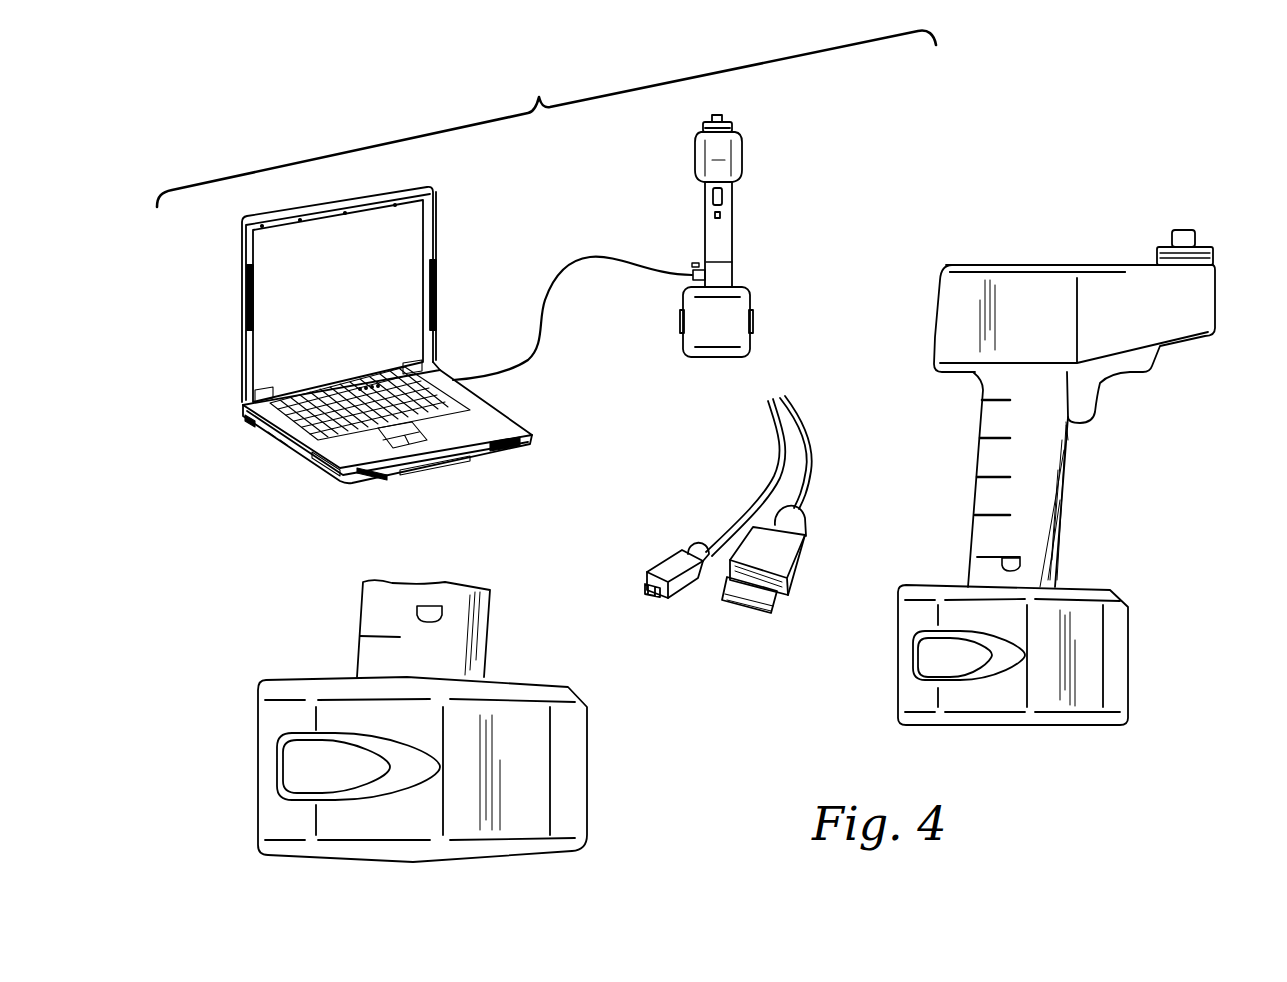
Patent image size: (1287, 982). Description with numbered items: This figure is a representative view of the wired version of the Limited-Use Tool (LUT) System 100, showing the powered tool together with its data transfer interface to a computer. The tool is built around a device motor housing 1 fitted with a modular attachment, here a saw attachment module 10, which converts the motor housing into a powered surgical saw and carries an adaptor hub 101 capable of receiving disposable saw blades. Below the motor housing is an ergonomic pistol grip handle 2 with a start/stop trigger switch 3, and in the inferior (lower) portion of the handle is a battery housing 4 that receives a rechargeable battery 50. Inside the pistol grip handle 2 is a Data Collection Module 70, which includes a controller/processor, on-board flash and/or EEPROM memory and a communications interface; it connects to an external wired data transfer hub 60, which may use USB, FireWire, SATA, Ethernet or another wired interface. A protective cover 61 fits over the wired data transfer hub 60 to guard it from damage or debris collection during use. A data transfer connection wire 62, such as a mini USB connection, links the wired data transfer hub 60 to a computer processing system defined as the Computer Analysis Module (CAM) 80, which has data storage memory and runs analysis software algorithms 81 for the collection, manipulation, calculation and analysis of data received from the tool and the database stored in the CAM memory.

The device motor housing 1 is at (758, 154).
The pistol grip handle 2 is at (740, 207).
The start/stop trigger switch 3 is at (1110, 400).
The battery housing 4 is at (1139, 643).
The saw attachment module 10 is at (1103, 265).
The rechargeable battery 50 is at (250, 764).
The wired data transfer hub 60 is at (690, 268).
The protective cover 61 is at (692, 262).
The data transfer connection wire 62 is at (542, 358).
The data collection module 70 is at (722, 269).
The Computer Analysis Module 80 is at (341, 335).
The analysis software algorithms 81 is at (232, 332).
The Limited-Use Tool System 100 is at (546, 119).
The adaptor hub 101 is at (1198, 245).